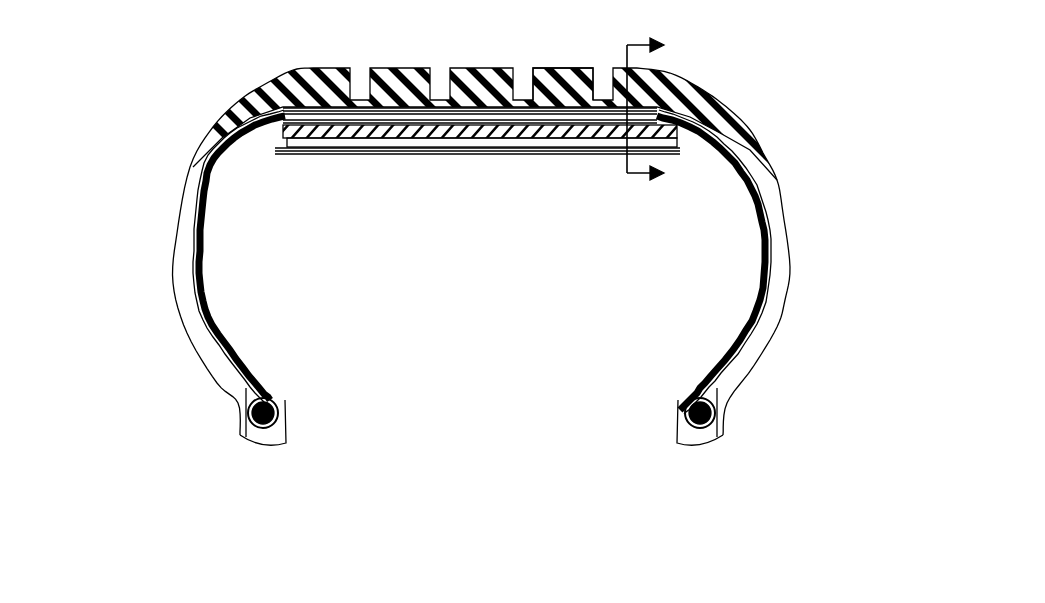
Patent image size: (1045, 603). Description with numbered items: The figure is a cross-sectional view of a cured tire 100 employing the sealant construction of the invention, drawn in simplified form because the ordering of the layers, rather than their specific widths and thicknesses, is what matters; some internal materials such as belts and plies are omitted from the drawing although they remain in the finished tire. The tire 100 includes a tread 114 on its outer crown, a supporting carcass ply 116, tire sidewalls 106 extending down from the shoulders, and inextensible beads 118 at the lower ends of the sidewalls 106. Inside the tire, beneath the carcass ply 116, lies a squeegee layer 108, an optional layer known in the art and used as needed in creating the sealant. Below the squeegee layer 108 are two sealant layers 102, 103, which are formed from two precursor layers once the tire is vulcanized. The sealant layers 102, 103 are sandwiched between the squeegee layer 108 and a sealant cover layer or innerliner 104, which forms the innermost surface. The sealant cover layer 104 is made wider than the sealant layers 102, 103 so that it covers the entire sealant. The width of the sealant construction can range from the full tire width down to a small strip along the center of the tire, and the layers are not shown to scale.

The tire 100 is at (740, 58).
The sealant layer 102 is at (568, 138).
The sealant layer 103 is at (447, 145).
The sealant cover layer or innerliner 104 is at (348, 156).
The tire sidewall 106 is at (172, 250).
The squeegee layer 108 is at (332, 110).
The tread 114 is at (413, 70).
The carcass ply 116 is at (550, 100).
The inextensible bead 118 is at (243, 437).